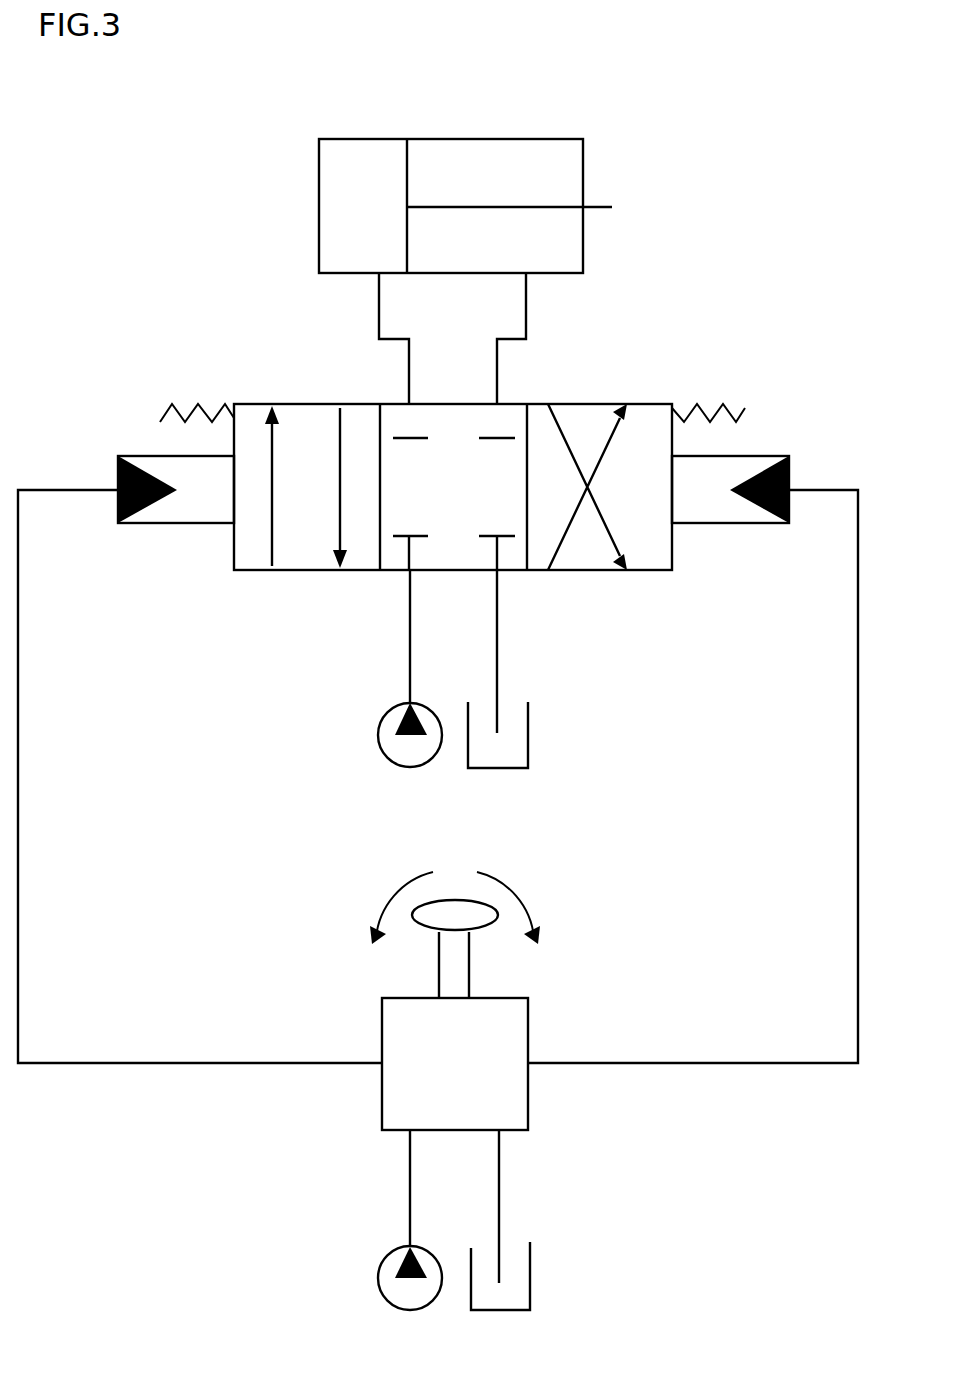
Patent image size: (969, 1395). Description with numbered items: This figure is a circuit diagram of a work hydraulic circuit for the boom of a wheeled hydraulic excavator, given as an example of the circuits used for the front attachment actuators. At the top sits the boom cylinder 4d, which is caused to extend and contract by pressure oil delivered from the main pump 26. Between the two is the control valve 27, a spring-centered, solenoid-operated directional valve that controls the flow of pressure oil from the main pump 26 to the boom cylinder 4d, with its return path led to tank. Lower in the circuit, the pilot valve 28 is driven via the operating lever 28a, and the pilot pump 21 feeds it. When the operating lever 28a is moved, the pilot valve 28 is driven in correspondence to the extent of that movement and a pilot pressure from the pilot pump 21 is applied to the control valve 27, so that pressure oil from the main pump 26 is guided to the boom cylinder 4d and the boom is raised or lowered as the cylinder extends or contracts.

The boom cylinder 4d is at (470, 139).
The control valve 27 is at (625, 404).
The main pump 26 is at (378, 733).
The pilot valve 28 is at (528, 1130).
The operating lever 28a is at (469, 960).
The pilot pump 21 is at (378, 1282).